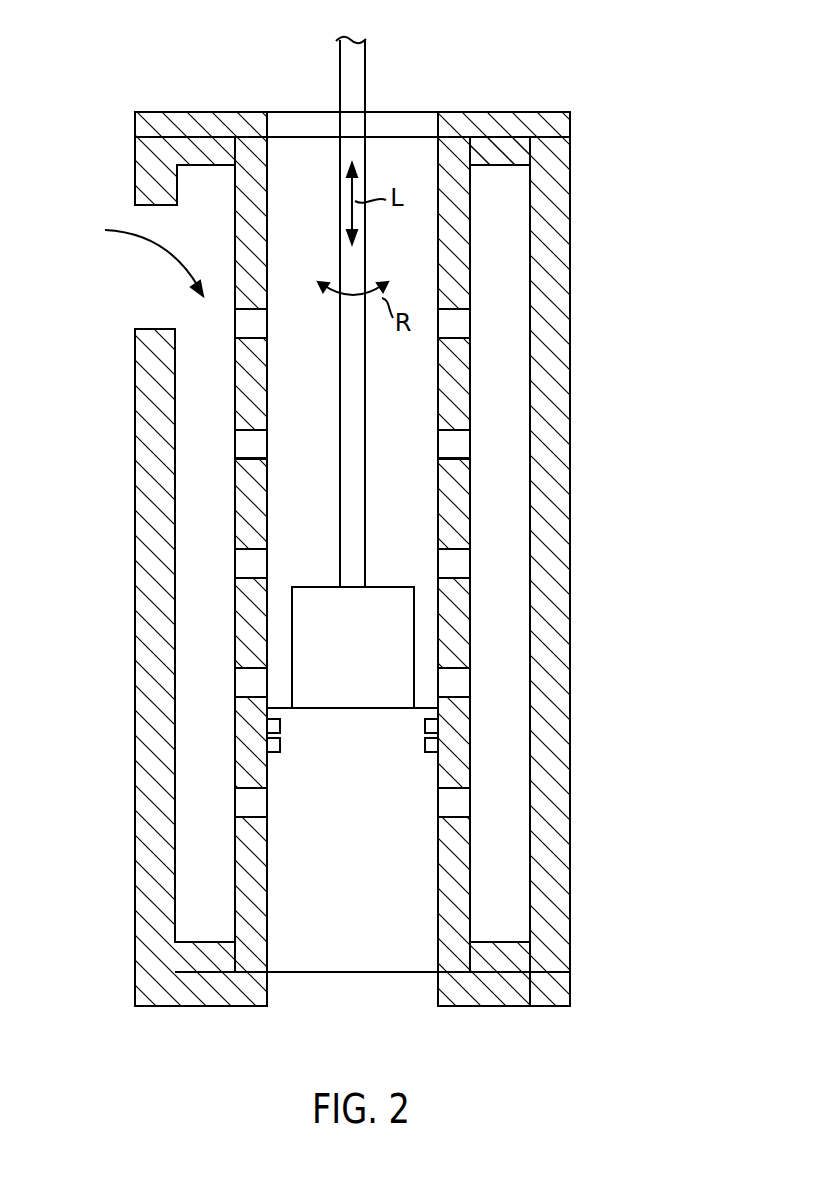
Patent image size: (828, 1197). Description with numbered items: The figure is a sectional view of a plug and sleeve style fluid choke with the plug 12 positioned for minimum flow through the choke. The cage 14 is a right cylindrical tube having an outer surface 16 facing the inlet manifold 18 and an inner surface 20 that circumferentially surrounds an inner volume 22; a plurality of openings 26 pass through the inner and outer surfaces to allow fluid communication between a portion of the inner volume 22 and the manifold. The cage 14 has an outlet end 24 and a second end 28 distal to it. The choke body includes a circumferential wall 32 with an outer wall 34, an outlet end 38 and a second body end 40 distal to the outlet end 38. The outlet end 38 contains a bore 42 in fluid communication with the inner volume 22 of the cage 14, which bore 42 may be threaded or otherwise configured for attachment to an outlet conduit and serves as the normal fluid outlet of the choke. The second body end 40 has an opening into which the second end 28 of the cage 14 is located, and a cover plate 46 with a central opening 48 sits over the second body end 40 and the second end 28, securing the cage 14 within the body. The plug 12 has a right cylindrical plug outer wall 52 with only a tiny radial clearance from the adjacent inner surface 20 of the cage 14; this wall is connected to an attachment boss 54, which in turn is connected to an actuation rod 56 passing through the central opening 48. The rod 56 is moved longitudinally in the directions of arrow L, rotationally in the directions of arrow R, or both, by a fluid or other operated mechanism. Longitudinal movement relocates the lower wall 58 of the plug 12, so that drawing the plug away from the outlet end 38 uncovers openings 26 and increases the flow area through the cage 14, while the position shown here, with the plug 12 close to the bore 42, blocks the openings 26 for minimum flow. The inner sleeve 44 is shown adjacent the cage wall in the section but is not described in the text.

The plug 12 is at (342, 852).
The cage 14 is at (467, 222).
The outer surface 16 is at (470, 727).
The inlet manifold 18 is at (482, 382).
The inner surface 20 is at (437, 232).
The inner volume 22 is at (384, 492).
The outlet end 24 is at (513, 955).
The openings 26 is at (465, 320).
The second end 28 is at (453, 136).
The circumferential wall 32 is at (562, 823).
The outer wall 34 is at (571, 760).
The outlet end 38 is at (498, 987).
The second body end 40 is at (496, 152).
The bore 42 is at (437, 985).
The inner sleeve 44 is at (240, 153).
The cover plate 46 is at (192, 112).
The central opening 48 is at (400, 123).
The plug outer wall 52 is at (339, 949).
The attachment boss 54 is at (337, 659).
The actuation rod 56 is at (366, 393).
The lower wall 58 is at (342, 975).